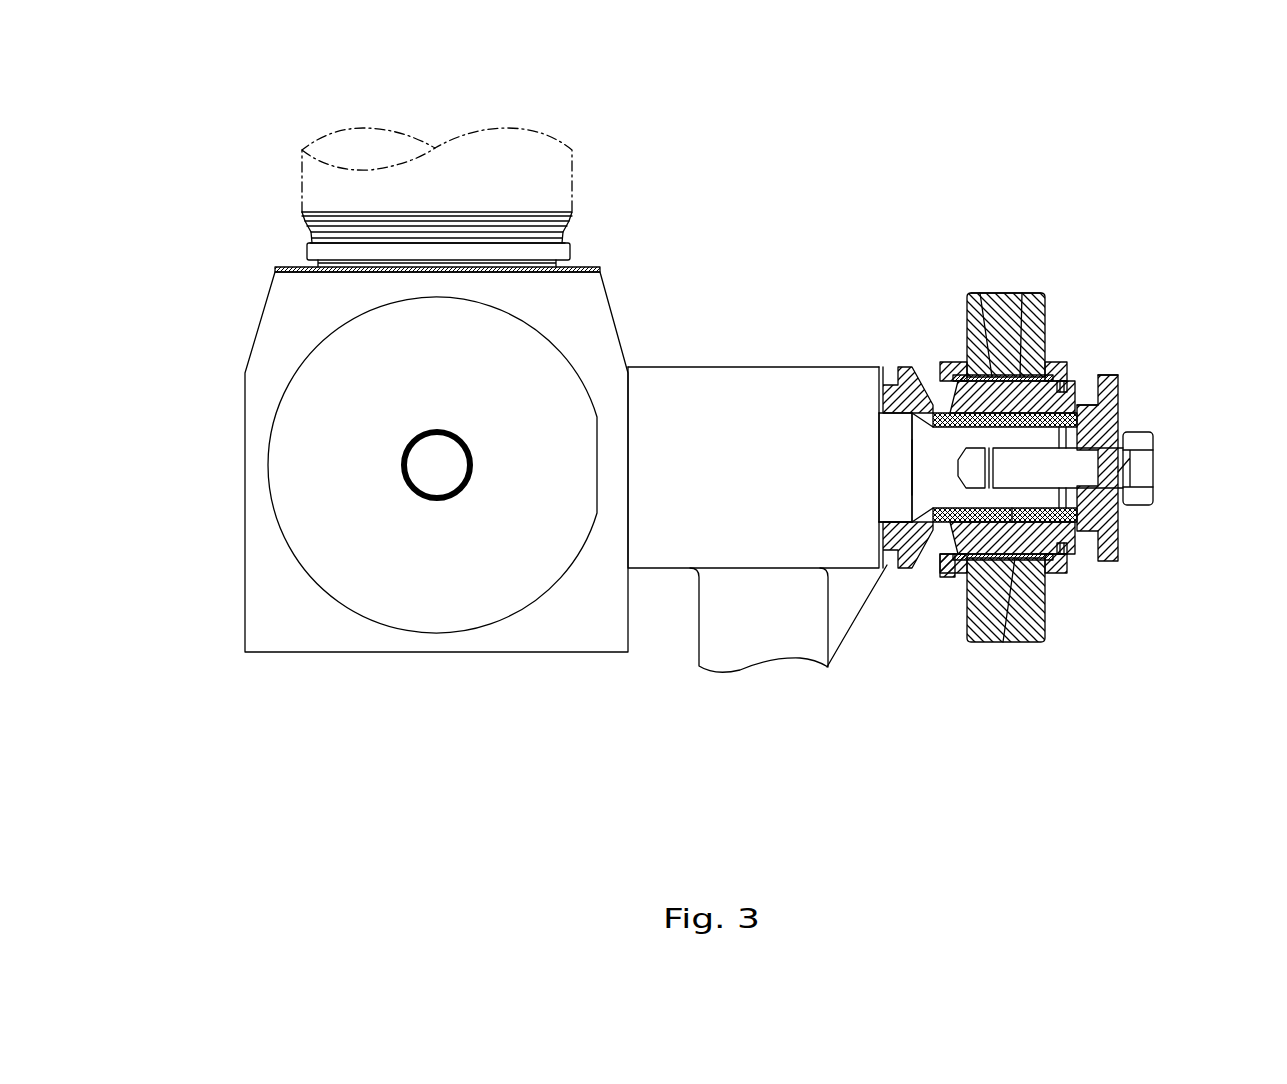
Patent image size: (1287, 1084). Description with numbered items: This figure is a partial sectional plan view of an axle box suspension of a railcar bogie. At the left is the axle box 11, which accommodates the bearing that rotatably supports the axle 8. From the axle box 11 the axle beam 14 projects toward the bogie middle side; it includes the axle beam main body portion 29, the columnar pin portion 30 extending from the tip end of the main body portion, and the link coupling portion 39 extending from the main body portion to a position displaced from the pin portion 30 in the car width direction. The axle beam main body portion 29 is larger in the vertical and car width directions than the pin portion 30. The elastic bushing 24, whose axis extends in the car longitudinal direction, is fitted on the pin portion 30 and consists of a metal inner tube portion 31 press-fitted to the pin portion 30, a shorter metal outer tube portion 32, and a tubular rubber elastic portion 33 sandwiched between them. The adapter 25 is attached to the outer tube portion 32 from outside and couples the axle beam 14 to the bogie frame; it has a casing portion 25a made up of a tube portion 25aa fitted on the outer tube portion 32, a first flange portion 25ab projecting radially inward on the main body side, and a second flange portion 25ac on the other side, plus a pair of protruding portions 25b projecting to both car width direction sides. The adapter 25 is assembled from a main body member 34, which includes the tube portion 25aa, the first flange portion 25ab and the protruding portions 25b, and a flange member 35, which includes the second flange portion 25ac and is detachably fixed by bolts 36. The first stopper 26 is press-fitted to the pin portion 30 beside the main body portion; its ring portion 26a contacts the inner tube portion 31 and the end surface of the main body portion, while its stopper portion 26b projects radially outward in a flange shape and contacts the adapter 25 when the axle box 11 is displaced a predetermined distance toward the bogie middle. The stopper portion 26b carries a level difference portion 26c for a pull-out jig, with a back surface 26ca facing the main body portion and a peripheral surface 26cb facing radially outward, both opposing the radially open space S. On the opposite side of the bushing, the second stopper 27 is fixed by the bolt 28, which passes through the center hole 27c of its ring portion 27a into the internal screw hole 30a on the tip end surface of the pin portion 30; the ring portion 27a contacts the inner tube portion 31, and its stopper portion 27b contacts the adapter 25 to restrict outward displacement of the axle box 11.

The axle 8 is at (296, 162).
The axle box 11 is at (245, 612).
The axle beam 14 is at (682, 377).
The axle beam main body portion 29 is at (745, 377).
The link coupling portion 39 is at (692, 635).
The first stopper 26 is at (905, 570).
The ring portion 26a is at (915, 403).
The stopper portion 26b is at (897, 374).
The level difference portion 26c is at (872, 227).
The back surface 26ca is at (910, 400).
The peripheral surface 26cb is at (884, 384).
The pin portion 30 is at (937, 522).
The internal screw hole 30a is at (1018, 508).
The adapter 25 is at (1208, 227).
The casing portion 25a is at (1047, 580).
The tube portion 25aa is at (965, 575).
The first flange portion 25ab is at (947, 560).
The second flange portion 25ac is at (1072, 575).
The protruding portion 25b is at (1042, 293).
The main body member 34 is at (1058, 366).
The flange member 35 is at (1078, 388).
The bolt 36 is at (1090, 404).
The elastic bushing 24 is at (1042, 227).
The inner tube portion 31 is at (945, 365).
The outer tube portion 32 is at (1030, 293).
The elastic portion 33 is at (978, 293).
The second stopper 27 is at (1118, 553).
The ring portion 27a is at (1090, 372).
The stopper portion 27b is at (1118, 388).
The center hole 27c is at (1118, 422).
The bolt 28 is at (1153, 472).
The space S is at (900, 535).